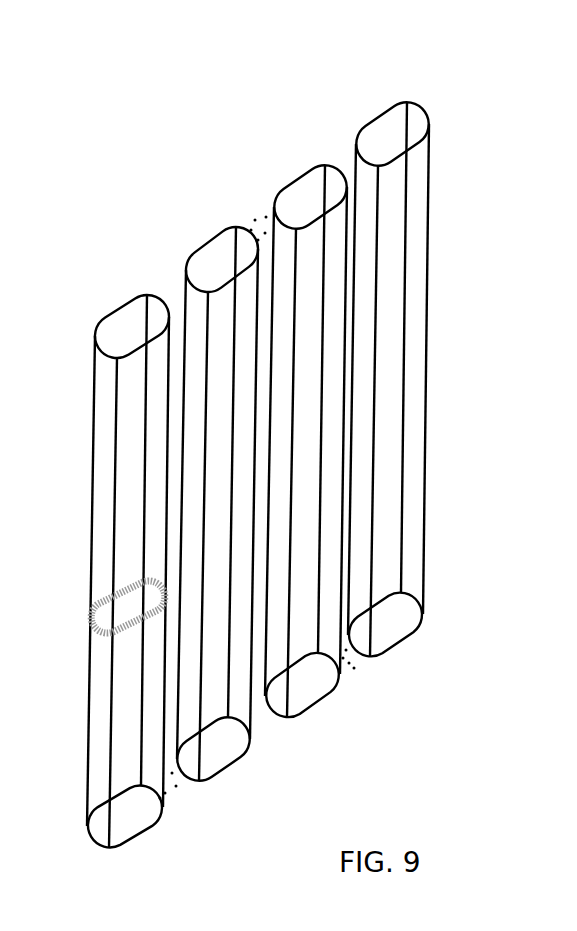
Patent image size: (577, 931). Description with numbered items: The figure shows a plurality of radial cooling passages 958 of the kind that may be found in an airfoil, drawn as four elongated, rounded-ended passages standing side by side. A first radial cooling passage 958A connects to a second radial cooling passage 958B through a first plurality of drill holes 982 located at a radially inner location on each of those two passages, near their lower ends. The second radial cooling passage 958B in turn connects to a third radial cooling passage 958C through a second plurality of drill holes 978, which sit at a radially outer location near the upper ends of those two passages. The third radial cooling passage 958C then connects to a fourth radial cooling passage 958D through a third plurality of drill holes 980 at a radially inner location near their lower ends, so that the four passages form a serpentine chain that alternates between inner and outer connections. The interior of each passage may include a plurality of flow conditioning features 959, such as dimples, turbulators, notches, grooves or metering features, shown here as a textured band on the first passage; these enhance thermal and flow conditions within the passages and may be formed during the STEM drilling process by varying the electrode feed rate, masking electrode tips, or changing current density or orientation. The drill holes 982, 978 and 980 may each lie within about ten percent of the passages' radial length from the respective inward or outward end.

The radial cooling passages 958 is at (311, 440).
The first radial cooling passage 958A is at (122, 312).
The second radial cooling passage 958B is at (195, 250).
The third radial cooling passage 958C is at (299, 170).
The fourth radial cooling passage 958D is at (381, 117).
The flow conditioning features 959 is at (88, 617).
The second plurality of drill holes 978 is at (252, 212).
The third plurality of drill holes 980 is at (358, 670).
The first plurality of drill holes 982 is at (175, 787).